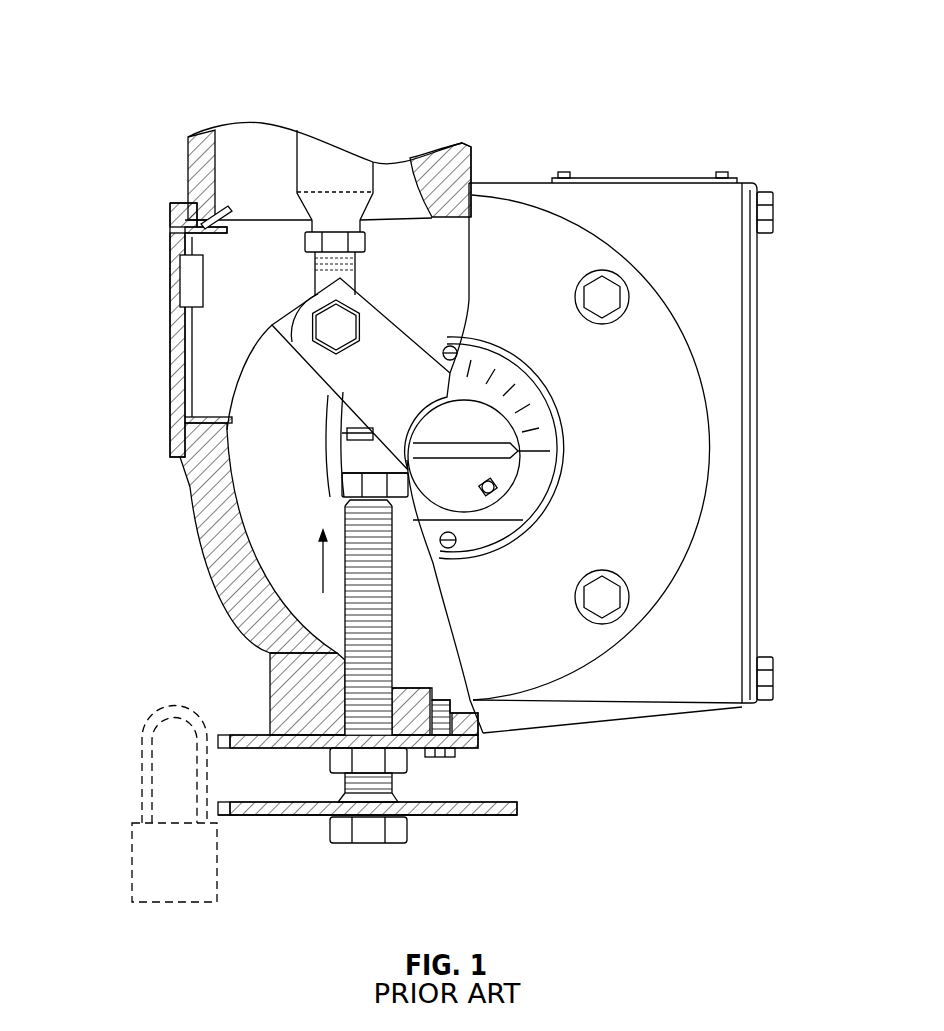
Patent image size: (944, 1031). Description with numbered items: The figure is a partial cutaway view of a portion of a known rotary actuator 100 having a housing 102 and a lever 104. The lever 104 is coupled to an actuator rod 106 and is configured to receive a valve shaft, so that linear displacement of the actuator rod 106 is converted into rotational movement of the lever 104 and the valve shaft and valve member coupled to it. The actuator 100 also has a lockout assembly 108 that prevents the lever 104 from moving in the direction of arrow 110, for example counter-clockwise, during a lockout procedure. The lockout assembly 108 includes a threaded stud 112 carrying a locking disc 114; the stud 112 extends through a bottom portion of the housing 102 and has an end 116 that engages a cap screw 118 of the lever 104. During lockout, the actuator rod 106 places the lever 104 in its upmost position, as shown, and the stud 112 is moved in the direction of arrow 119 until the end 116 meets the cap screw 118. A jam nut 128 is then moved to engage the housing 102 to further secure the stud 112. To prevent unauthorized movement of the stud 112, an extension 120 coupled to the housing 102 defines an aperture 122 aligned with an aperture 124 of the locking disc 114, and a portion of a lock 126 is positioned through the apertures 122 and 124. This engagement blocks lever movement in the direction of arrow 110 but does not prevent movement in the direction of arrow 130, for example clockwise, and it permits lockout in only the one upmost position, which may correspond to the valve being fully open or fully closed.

The rotary actuator 100 is at (692, 58).
The housing 102 is at (725, 556).
The lever 104 is at (378, 328).
The actuator rod 106 is at (312, 155).
The lockout assembly 108 is at (232, 660).
The arrow 110 is at (230, 313).
The threaded stud 112 is at (380, 652).
The locking disc 114 is at (495, 812).
The end 116 is at (340, 500).
The cap screw 118 is at (325, 458).
The arrow 119 is at (323, 578).
The extension 120 is at (302, 748).
The aperture 122 is at (248, 737).
The aperture 124 is at (249, 808).
The lock 126 is at (145, 865).
The jam nut 128 is at (398, 762).
The arrow 130 is at (652, 256).